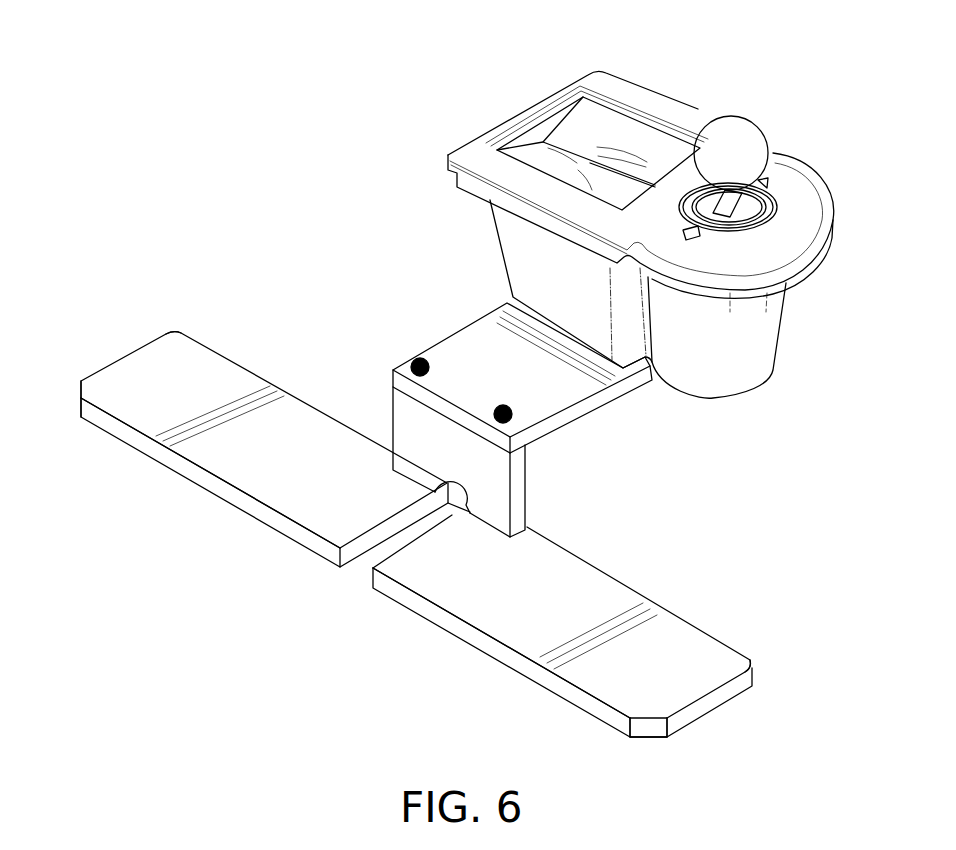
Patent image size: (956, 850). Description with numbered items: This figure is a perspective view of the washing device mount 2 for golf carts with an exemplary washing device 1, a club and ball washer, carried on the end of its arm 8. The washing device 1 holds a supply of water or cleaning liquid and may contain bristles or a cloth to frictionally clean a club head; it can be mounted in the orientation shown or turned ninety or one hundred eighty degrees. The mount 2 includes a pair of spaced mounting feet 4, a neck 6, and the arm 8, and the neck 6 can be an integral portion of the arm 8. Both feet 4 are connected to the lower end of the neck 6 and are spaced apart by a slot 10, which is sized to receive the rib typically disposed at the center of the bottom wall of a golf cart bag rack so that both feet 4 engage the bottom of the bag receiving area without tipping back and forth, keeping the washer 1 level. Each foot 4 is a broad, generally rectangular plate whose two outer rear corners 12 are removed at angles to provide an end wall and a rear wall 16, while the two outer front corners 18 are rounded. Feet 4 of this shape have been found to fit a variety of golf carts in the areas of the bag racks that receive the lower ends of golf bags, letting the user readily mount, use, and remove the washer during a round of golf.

The washing device 1 is at (657, 103).
The mount 2 is at (302, 278).
The mounting foot 4 is at (230, 370).
The neck 6 is at (518, 478).
The arm 8 is at (550, 395).
The slot 10 is at (378, 566).
The outer rear corner 12 is at (81, 395).
The rear wall 16 is at (258, 502).
The outer front corner 18 is at (180, 332).